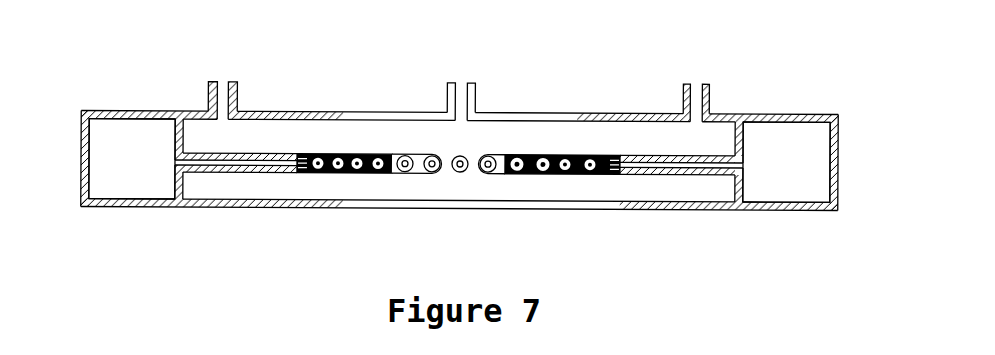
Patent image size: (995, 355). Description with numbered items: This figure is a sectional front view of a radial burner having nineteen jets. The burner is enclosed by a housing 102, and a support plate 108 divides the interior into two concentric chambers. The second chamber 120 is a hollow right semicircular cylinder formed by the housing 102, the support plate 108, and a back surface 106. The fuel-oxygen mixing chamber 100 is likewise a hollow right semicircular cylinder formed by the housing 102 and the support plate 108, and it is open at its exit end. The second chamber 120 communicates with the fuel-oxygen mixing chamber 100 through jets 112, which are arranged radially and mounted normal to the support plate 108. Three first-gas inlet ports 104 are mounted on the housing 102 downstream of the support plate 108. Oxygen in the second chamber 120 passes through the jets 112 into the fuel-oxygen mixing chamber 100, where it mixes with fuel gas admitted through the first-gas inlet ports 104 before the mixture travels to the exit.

The fuel-oxygen mixing chamber 100 is at (317, 139).
The housing 102 is at (233, 222).
The first-gas inlet ports 104 is at (236, 102).
The back surface 106 is at (80, 142).
The support plate 108 is at (176, 148).
The jets 112 is at (598, 177).
The second chamber 120 is at (132, 162).